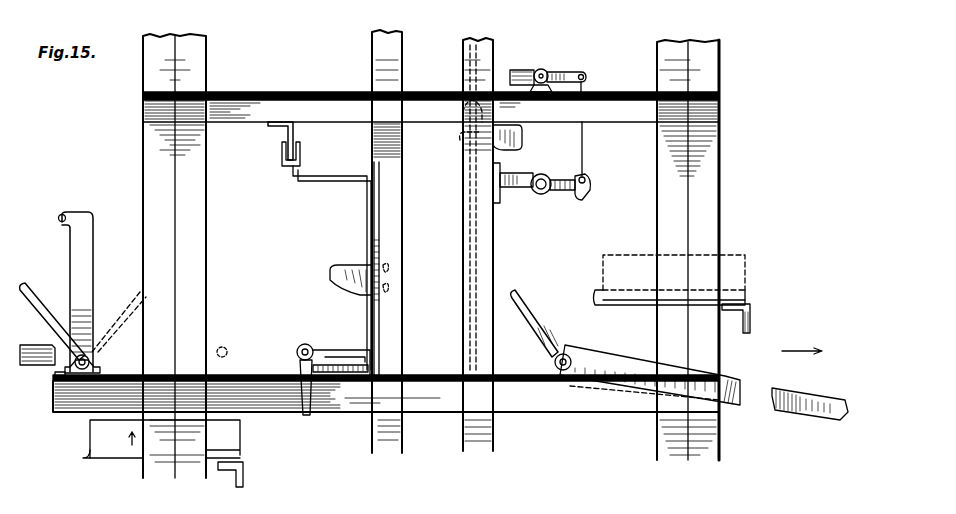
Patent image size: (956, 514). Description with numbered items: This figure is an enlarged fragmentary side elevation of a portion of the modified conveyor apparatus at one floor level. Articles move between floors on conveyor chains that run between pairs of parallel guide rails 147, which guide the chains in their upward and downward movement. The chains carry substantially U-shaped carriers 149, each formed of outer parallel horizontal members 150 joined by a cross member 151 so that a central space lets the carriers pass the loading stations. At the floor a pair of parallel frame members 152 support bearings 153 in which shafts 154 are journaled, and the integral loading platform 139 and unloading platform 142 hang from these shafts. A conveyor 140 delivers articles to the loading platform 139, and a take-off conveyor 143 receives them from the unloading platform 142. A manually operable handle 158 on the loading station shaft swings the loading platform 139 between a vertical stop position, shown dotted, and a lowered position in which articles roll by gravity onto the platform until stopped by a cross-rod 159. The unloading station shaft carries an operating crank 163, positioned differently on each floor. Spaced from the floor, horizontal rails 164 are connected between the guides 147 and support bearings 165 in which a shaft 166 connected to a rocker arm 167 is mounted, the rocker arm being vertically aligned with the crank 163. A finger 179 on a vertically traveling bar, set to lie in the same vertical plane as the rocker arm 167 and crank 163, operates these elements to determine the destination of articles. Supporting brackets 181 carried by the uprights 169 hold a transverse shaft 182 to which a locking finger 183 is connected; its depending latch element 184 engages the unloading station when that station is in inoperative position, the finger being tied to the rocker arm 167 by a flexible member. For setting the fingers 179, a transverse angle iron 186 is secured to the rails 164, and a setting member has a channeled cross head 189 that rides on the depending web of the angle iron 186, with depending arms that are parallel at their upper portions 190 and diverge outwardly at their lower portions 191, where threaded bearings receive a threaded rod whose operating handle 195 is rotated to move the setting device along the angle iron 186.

The loading platform 139 is at (103, 262).
The conveyor 140 is at (36, 366).
The unloading platform 142 is at (619, 367).
The take-off conveyor 143 is at (820, 420).
The guide rails 147 is at (203, 152).
The carrier 149 is at (590, 301).
The horizontal members 150 is at (612, 307).
The cross member 151 is at (740, 334).
The frame members 152 is at (546, 412).
The bearings 153 is at (96, 355).
The shaft 154 is at (58, 392).
The handle 158 is at (40, 298).
The cross-rod 159 is at (64, 214).
The operating crank 163 is at (519, 295).
The horizontal rails 164 is at (645, 122).
The bearings 165 is at (525, 93).
The shaft 166 is at (538, 66).
The rocker arm 167 is at (570, 70).
The brackets 169 is at (470, 250).
The finger 179 is at (500, 152).
The supporting brackets 181 is at (512, 190).
The transverse shaft 182 is at (540, 196).
The locking finger 183 is at (563, 178).
The latch element 184 is at (584, 200).
The angle iron 186 is at (294, 130).
The cross head 189 is at (300, 158).
The parallel arm portions 190 is at (370, 200).
The diverging arm portions 191 is at (372, 237).
The operating handle 195 is at (584, 143).